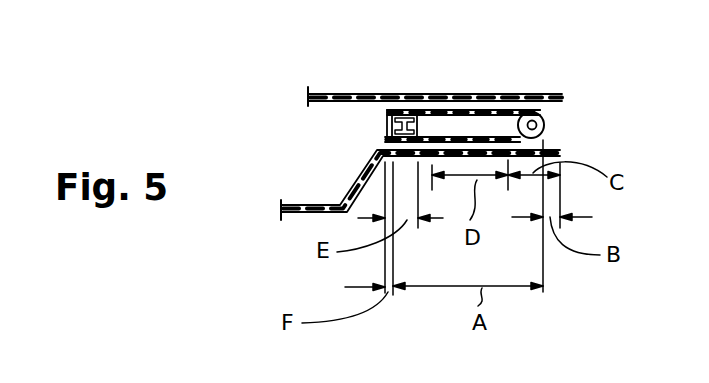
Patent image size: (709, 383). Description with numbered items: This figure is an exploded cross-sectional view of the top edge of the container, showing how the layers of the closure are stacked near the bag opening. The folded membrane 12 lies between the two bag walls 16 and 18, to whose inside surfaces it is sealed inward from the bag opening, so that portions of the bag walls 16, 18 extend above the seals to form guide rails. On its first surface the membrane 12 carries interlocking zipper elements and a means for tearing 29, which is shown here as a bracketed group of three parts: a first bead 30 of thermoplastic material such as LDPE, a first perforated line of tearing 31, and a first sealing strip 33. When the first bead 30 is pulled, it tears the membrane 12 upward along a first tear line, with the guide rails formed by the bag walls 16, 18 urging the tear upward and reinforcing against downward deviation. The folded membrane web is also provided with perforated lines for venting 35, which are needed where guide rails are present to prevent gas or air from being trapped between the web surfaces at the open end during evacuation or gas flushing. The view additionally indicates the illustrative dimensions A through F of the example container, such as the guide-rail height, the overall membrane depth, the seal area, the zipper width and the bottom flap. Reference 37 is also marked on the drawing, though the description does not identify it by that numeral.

The membrane 12 is at (447, 111).
The bag wall 16 is at (327, 95).
The bag wall 18 is at (298, 205).
The means for tearing 29 is at (627, 63).
The first bead 30 is at (545, 117).
The first perforated line of tearing 31 is at (546, 150).
The first sealing strip 33 is at (530, 107).
The perforated lines for venting 35 is at (502, 110).
The gap 37 is at (348, 195).